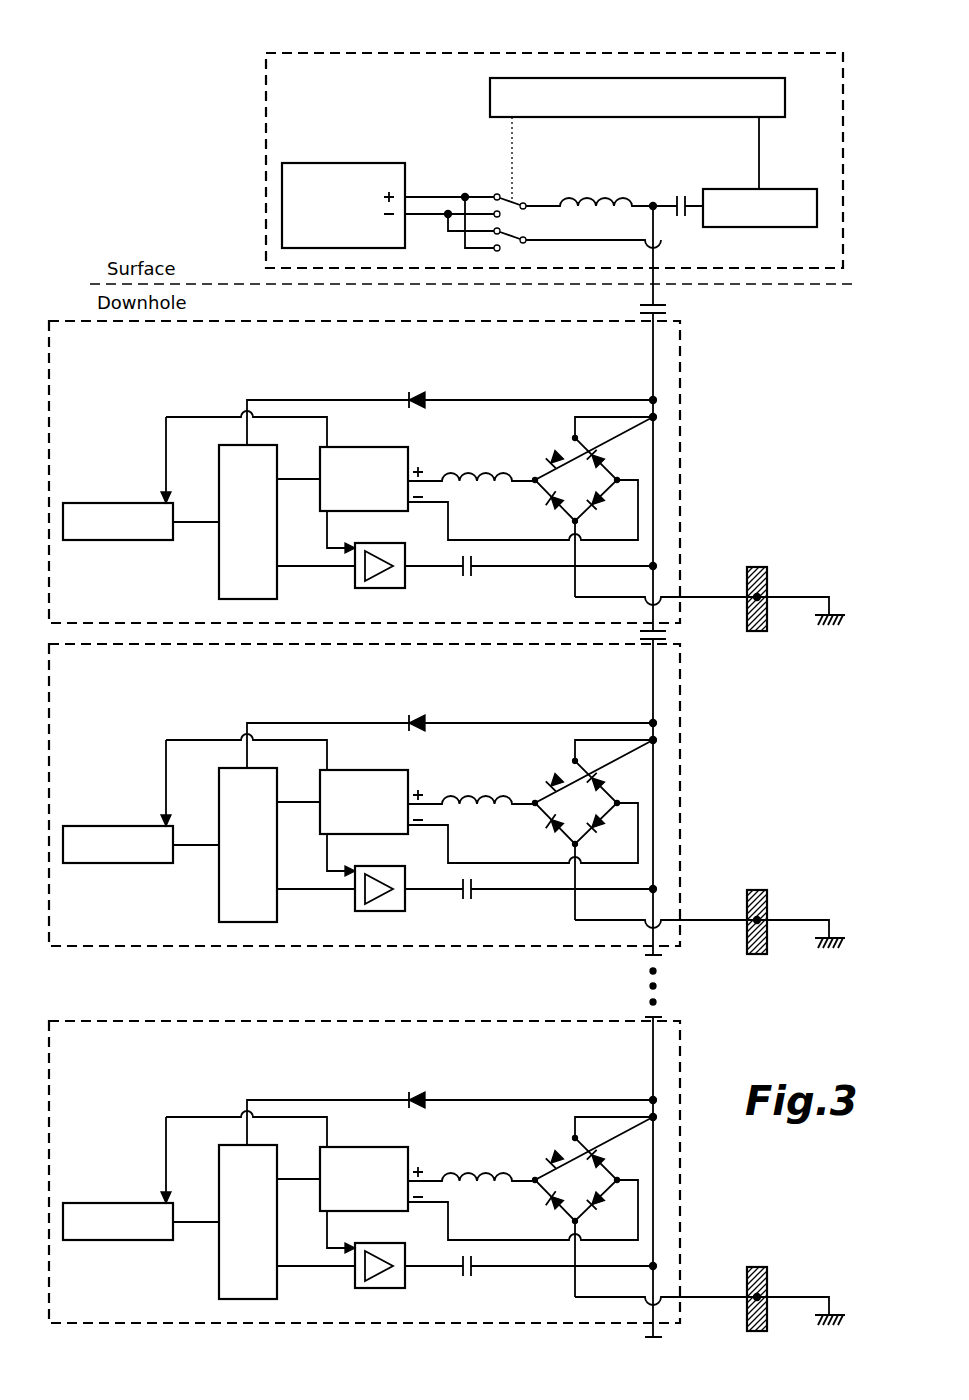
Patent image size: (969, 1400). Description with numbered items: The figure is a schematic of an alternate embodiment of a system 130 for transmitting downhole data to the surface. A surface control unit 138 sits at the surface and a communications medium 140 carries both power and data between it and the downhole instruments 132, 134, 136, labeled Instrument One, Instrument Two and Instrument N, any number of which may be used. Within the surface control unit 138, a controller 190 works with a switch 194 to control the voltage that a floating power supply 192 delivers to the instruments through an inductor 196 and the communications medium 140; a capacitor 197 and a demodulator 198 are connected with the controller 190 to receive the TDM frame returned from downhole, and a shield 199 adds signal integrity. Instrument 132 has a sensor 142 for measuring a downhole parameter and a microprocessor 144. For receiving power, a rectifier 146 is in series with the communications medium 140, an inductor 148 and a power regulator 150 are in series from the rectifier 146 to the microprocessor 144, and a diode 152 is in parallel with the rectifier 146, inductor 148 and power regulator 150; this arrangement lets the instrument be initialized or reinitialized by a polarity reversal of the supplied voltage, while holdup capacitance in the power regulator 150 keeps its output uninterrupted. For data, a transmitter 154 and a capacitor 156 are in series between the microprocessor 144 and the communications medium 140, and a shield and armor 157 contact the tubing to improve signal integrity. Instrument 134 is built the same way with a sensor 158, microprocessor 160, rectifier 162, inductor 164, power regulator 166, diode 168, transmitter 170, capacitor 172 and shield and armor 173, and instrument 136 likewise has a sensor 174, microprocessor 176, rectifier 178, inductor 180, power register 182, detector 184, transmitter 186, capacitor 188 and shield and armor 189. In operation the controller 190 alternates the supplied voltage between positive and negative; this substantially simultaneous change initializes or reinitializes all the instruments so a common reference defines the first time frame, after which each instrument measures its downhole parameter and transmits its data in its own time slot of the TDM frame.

The system 130 is at (212, 84).
The surface control unit 138 is at (266, 172).
The controller 190 is at (726, 78).
The floating power supply 192 is at (363, 163).
The switch 194 is at (532, 188).
The inductor 196 is at (595, 196).
The capacitor 197 is at (681, 196).
The demodulator 198 is at (798, 189).
The shield 199 is at (661, 243).
The communications medium 140 is at (655, 299).
The instrument 132 is at (680, 482).
The instrument 134 is at (413, 795).
The instrument 136 is at (413, 1172).
The sensor 142 is at (124, 503).
The microprocessor 144 is at (219, 558).
The rectifier 146 is at (598, 452).
The inductor 148 is at (462, 471).
The power regulator 150 is at (347, 447).
The diode 152 is at (417, 392).
The transmitter 154 is at (372, 543).
The capacitor 156 is at (470, 556).
The shield and armor 157 is at (709, 608).
The sensor 158 is at (118, 817).
The microprocessor 160 is at (202, 845).
The rectifier 162 is at (532, 805).
The inductor 164 is at (471, 785).
The power regulator 166 is at (371, 789).
The diode 168 is at (452, 713).
The transmitter 170 is at (398, 874).
The capacitor 172 is at (531, 868).
The shield and armor 173 is at (710, 943).
The sensor 174 is at (118, 1194).
The microprocessor 176 is at (202, 1222).
The rectifier 178 is at (532, 1182).
The inductor 180 is at (471, 1162).
The power register 182 is at (371, 1166).
The detector 184 is at (452, 1090).
The transmitter 186 is at (398, 1251).
The capacitor 188 is at (531, 1245).
The shield and armor 189 is at (710, 1314).